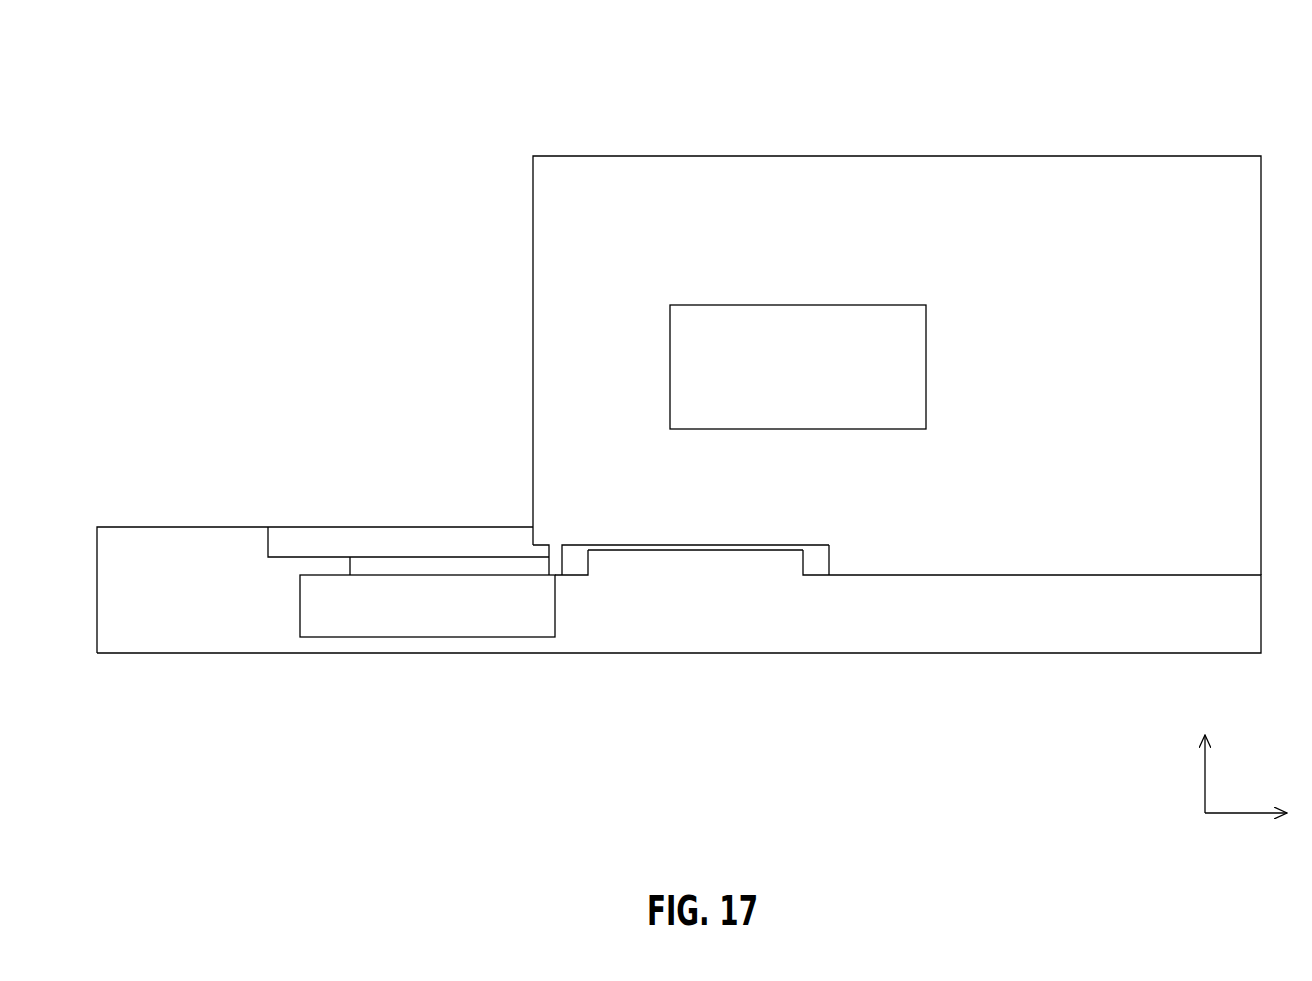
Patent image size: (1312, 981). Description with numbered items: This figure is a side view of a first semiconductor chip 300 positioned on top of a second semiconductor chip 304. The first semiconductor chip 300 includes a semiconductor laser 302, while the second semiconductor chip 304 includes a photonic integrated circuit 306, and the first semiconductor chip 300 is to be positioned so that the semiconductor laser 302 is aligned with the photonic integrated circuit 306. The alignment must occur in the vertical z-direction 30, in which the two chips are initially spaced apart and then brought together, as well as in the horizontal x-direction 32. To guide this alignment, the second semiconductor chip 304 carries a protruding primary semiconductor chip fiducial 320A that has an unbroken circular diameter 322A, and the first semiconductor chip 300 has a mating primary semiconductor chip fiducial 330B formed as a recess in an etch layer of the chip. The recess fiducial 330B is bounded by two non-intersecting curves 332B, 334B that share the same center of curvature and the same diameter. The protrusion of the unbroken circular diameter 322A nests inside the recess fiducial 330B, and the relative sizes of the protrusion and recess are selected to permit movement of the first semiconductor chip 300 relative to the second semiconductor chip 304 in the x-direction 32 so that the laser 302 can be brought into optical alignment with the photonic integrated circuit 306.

The first semiconductor chip 300 is at (1119, 145).
The semiconductor laser 302 is at (670, 334).
The second semiconductor chip 304 is at (717, 662).
The photonic integrated circuit 306 is at (354, 637).
The primary semiconductor chip fiducial 320A is at (664, 564).
The unbroken circular diameter 322A is at (585, 562).
The primary semiconductor chip fiducial 330B is at (815, 580).
The non-intersecting curve 332B is at (835, 560).
The non-intersecting curve 334B is at (572, 560).
The z-direction 30 is at (1205, 772).
The x-direction 32 is at (1248, 815).